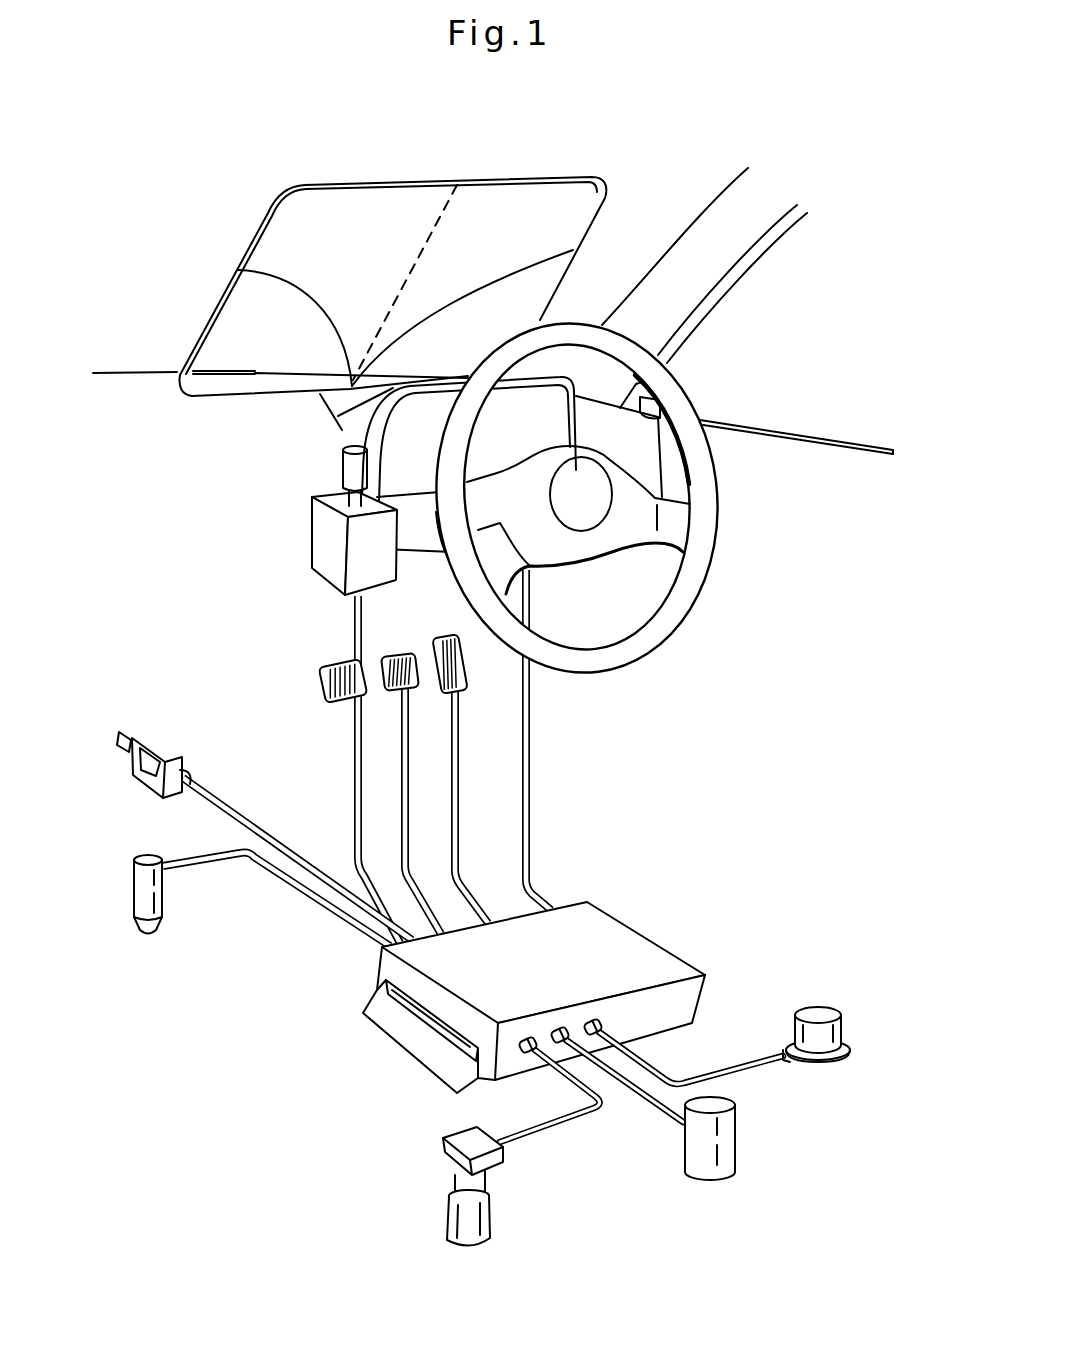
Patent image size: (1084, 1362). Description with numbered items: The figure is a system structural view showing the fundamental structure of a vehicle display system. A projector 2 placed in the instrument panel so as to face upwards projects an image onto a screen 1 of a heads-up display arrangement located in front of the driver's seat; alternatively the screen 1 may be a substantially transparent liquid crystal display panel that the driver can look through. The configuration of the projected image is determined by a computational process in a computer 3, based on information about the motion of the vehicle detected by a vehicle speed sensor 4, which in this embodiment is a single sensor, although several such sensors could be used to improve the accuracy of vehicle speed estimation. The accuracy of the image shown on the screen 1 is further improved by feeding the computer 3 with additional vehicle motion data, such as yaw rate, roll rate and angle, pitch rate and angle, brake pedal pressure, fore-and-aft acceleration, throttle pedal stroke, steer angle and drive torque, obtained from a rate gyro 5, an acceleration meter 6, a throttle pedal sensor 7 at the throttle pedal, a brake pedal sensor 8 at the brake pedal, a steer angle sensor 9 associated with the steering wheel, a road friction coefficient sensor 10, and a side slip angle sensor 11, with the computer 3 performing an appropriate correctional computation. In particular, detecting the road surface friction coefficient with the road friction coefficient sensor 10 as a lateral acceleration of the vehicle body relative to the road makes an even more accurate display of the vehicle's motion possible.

The screen 1 is at (571, 190).
The projector 2 is at (308, 538).
The computer 3 is at (627, 937).
The vehicle speed sensor 4 is at (165, 893).
The rate gyro 5 is at (738, 1147).
The acceleration meter 6 is at (820, 1067).
The throttle pedal sensor 7 is at (447, 699).
The brake pedal sensor 8 is at (392, 699).
The steer angle sensor 9 is at (498, 480).
The road friction coefficient sensor 10 is at (165, 740).
The side slip angle sensor 11 is at (493, 1212).